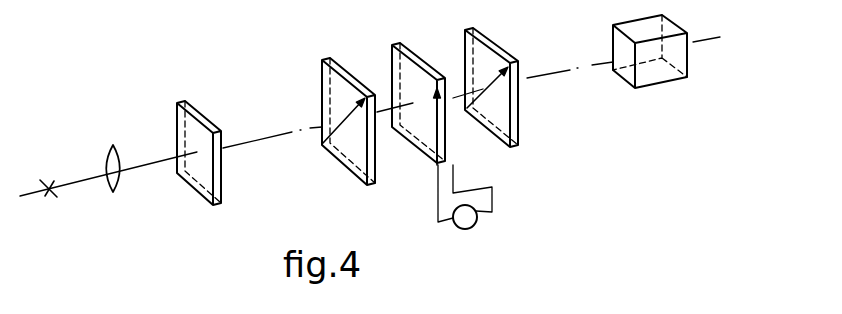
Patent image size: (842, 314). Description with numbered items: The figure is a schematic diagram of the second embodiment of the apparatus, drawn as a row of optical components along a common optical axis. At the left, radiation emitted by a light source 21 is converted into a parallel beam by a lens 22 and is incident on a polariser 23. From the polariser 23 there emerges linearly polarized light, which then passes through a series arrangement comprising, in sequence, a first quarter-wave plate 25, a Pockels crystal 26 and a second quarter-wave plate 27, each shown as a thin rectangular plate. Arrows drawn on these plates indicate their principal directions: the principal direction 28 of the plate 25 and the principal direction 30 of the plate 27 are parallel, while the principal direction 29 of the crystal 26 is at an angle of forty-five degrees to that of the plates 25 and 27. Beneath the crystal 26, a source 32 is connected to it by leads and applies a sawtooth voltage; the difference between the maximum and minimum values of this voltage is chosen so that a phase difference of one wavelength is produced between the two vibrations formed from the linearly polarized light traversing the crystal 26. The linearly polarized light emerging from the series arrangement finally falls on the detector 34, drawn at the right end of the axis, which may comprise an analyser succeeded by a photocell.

The light source 21 is at (52, 193).
The lens 22 is at (107, 188).
The polariser 23 is at (196, 190).
The λ/4 plate 25 is at (342, 163).
The Pockels crystal 26 is at (421, 153).
The λ/4 plate 27 is at (500, 142).
The principal direction 28 is at (349, 113).
The principal direction 29 is at (440, 129).
The principal direction 30 is at (497, 86).
The source 32 is at (477, 222).
The detector 34 is at (670, 80).